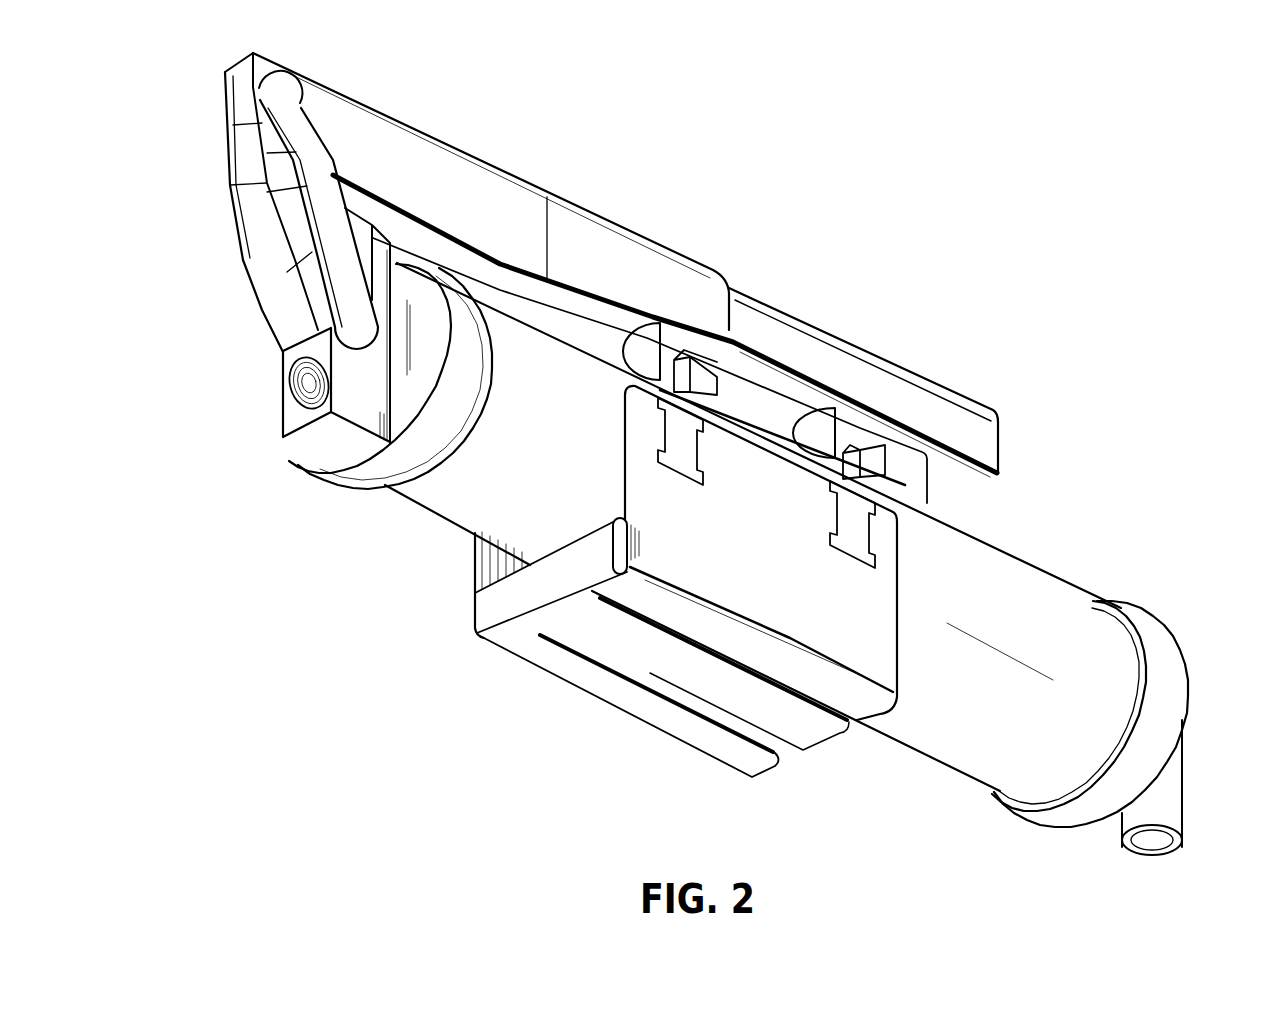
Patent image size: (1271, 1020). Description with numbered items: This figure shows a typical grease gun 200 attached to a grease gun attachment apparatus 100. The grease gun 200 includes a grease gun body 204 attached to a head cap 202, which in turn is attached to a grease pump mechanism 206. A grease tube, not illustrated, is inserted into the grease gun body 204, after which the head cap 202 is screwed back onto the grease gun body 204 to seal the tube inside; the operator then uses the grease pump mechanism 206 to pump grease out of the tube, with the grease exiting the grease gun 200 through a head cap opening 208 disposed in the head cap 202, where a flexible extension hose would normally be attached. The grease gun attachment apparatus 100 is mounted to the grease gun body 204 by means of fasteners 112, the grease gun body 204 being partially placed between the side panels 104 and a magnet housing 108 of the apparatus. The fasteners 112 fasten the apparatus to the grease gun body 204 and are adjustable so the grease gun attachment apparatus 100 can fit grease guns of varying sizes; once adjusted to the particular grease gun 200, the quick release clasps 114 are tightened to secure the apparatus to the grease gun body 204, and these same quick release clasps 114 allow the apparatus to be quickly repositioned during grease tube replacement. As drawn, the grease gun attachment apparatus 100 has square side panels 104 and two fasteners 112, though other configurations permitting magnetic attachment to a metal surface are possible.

The grease gun attachment apparatus 100 is at (540, 726).
The side panels 104 is at (472, 565).
The magnet housing 108 is at (500, 599).
The fasteners 112 is at (832, 533).
The quick release clasps 114 is at (838, 436).
The grease gun 200 is at (952, 85).
The head cap 202 is at (334, 483).
The grease gun body 204 is at (1066, 587).
The grease pump mechanism 206 is at (655, 235).
The head cap opening 208 is at (287, 388).